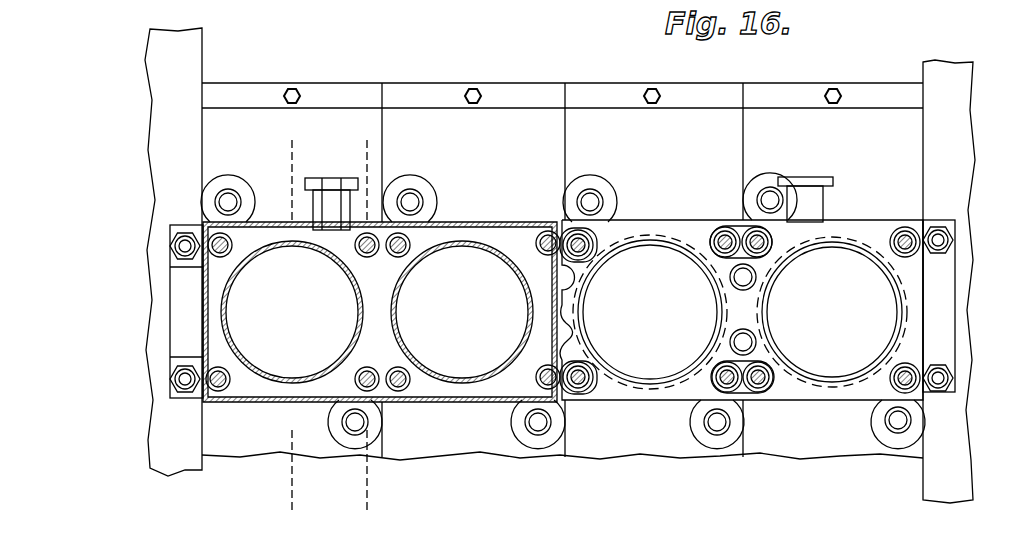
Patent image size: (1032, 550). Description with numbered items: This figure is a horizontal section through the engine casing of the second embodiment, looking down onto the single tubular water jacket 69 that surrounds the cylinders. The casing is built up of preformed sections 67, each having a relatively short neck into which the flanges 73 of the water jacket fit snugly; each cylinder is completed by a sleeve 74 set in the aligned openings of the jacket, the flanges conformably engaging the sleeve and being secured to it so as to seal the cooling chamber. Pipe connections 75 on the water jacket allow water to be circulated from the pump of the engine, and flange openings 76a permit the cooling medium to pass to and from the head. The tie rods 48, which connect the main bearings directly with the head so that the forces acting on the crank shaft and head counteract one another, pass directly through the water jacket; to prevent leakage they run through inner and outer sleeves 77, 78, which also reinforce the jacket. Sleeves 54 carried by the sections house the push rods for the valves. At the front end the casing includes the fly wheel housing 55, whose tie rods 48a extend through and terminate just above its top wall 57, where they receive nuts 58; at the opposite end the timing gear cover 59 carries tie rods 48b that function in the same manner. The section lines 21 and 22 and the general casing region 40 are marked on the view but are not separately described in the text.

The section line 21 is at (290, 148).
The section line 22 is at (365, 153).
The cylinder block 40 is at (410, 80).
The tie rods 48 is at (398, 258).
The tie rods 48a is at (185, 366).
The tie rods 48b is at (938, 256).
The sleeves 54 is at (603, 200).
The fly wheel housing 55 is at (250, 6).
The top wall 57 is at (162, 462).
The nuts 58 is at (184, 396).
The timing gear cover 59 is at (945, 500).
The preformed sections 67 is at (593, 125).
The tubular water jacket 69 is at (472, 220).
The flanges 73 is at (674, 240).
The sleeve 74 is at (468, 246).
The pipe connections 75 is at (340, 178).
The flange openings 76a is at (750, 282).
The inner sleeve 77 is at (543, 253).
The outer sleeve 78 is at (545, 258).